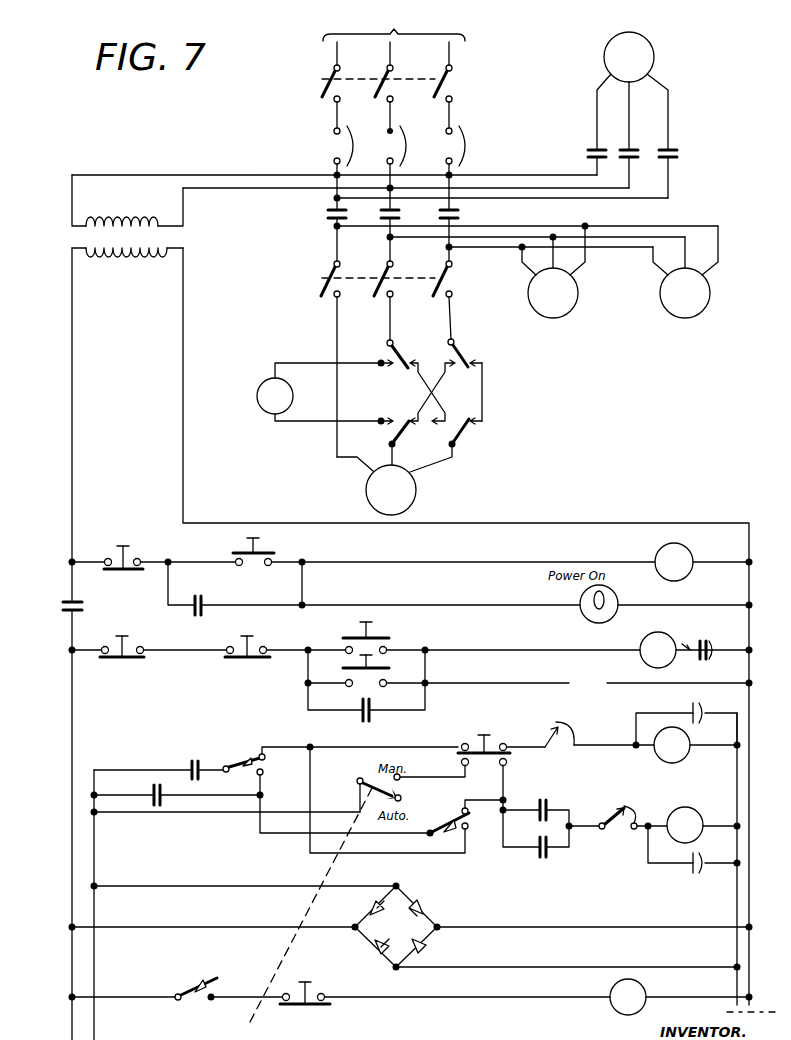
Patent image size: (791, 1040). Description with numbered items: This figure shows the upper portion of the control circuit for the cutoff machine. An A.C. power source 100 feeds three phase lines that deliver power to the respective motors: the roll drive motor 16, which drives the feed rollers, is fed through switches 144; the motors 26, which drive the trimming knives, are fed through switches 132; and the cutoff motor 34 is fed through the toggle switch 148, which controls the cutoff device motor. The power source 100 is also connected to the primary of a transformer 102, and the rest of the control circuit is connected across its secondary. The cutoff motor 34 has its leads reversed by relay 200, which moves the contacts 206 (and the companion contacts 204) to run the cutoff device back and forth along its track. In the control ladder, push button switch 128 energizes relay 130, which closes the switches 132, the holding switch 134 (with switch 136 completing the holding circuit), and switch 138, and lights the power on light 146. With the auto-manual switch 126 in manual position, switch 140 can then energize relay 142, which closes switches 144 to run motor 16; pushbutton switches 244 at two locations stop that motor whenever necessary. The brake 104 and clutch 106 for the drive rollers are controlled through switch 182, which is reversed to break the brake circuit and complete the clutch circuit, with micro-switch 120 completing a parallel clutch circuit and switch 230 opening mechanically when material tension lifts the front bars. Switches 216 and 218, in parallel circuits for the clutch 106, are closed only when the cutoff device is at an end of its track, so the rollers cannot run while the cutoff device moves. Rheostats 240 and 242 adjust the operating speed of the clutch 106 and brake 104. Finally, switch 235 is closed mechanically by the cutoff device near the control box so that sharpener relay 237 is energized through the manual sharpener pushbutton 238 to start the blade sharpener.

The A.C. power source 100 is at (470, 36).
The motor 16 is at (655, 52).
The switches 144 is at (668, 150).
The transformer 102 is at (62, 234).
The switches 132 is at (326, 214).
The toggle switch 148 is at (362, 278).
The motors 26 is at (568, 313).
The relay 200 is at (257, 389).
The reversing contacts 204 is at (456, 356).
The contacts 206 is at (450, 430).
The motor 34 is at (366, 490).
The switch 138 is at (62, 604).
The switch 136 is at (112, 555).
The push button switch 128 is at (232, 560).
The switch 134 is at (205, 600).
The relay 130 is at (658, 550).
The power on light 146 is at (581, 600).
The pushbutton switches 244 is at (240, 646).
The switch 140 is at (345, 647).
The relay 142 is at (676, 635).
The micro-switch 120 is at (228, 760).
The switch 182 is at (157, 783).
The auto-manual switch 126 is at (382, 780).
The switch 230 is at (438, 822).
The rheostat 242 is at (552, 726).
The switch 216 is at (555, 785).
The switch 218 is at (545, 858).
The rheostat 240 is at (612, 814).
The brake 104 is at (686, 757).
The clutch 106 is at (678, 808).
The switch 235 is at (200, 1005).
The manual sharpener pushbutton 238 is at (320, 1010).
The sharpener relay 237 is at (612, 1008).